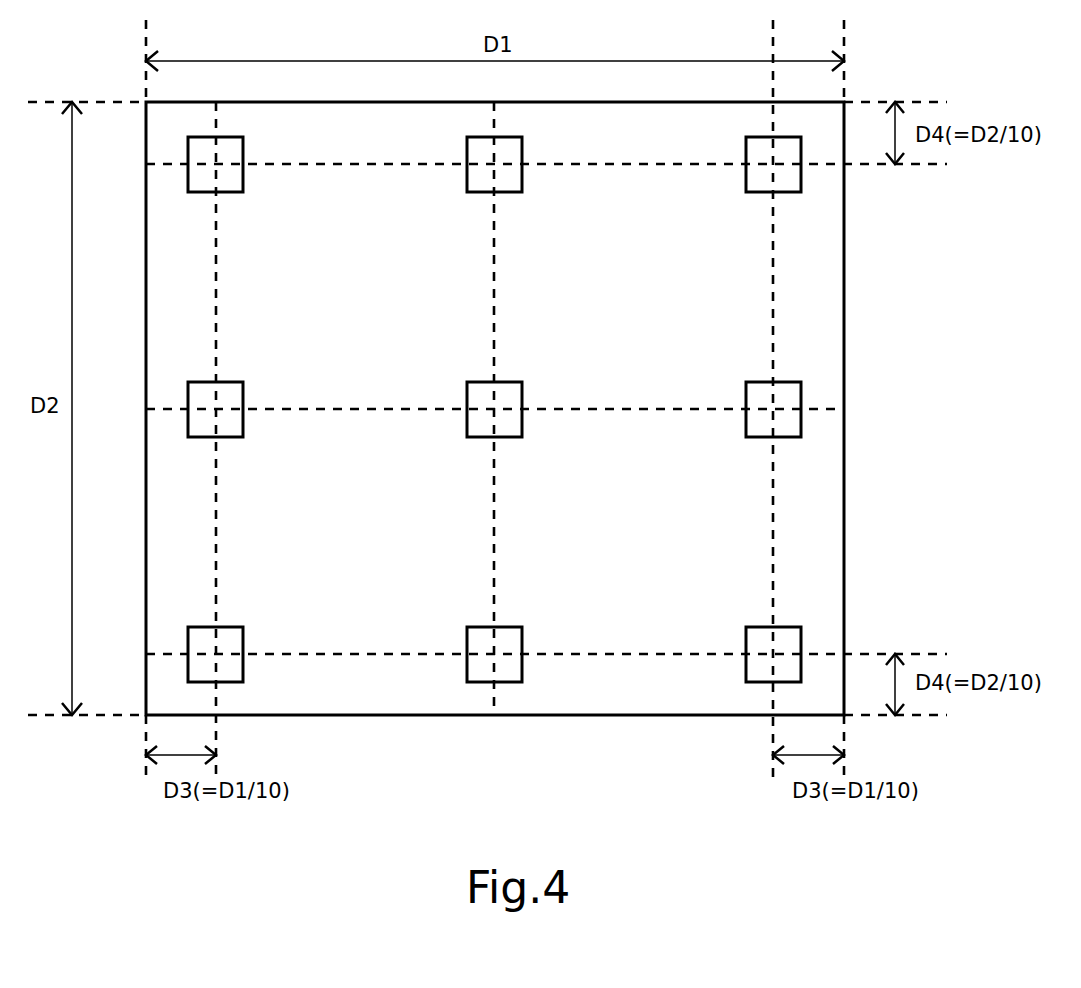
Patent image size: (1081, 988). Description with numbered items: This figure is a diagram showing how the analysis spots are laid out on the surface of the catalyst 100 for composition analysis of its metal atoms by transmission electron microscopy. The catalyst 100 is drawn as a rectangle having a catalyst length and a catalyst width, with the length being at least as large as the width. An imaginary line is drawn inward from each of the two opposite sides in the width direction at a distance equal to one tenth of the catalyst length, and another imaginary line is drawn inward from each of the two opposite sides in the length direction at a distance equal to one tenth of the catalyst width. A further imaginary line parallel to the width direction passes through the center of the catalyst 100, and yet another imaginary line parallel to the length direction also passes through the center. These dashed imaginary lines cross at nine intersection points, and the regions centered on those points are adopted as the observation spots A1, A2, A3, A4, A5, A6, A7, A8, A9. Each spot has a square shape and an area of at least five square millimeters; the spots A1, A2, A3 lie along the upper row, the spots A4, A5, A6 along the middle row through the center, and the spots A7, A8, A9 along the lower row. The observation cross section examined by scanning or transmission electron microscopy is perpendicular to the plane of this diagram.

The catalyst 100 is at (832, 317).
The observation spot A1 is at (236, 192).
The observation spot A2 is at (515, 192).
The observation spot A3 is at (789, 192).
The observation spot A4 is at (236, 437).
The observation spot A5 is at (505, 437).
The observation spot A6 is at (789, 437).
The observation spot A7 is at (226, 682).
The observation spot A8 is at (505, 682).
The observation spot A9 is at (790, 627).